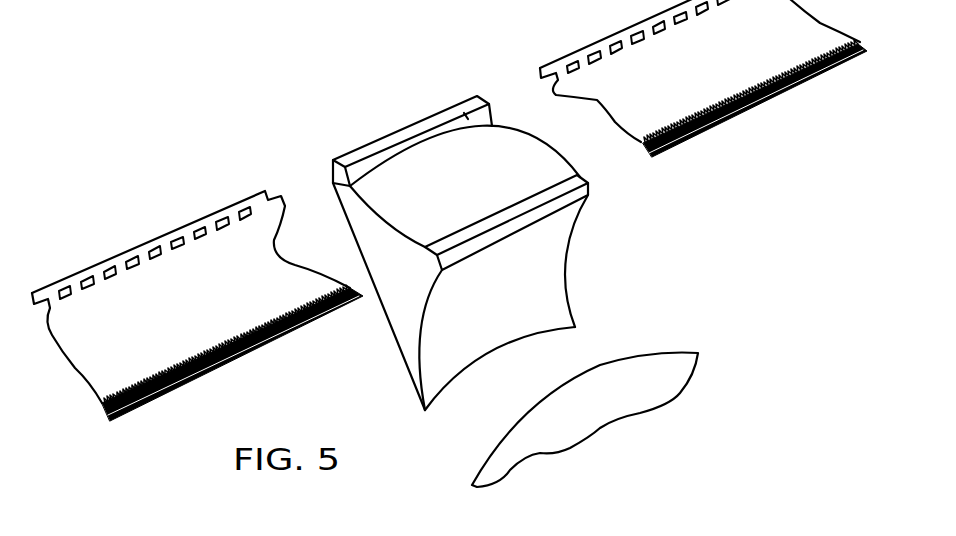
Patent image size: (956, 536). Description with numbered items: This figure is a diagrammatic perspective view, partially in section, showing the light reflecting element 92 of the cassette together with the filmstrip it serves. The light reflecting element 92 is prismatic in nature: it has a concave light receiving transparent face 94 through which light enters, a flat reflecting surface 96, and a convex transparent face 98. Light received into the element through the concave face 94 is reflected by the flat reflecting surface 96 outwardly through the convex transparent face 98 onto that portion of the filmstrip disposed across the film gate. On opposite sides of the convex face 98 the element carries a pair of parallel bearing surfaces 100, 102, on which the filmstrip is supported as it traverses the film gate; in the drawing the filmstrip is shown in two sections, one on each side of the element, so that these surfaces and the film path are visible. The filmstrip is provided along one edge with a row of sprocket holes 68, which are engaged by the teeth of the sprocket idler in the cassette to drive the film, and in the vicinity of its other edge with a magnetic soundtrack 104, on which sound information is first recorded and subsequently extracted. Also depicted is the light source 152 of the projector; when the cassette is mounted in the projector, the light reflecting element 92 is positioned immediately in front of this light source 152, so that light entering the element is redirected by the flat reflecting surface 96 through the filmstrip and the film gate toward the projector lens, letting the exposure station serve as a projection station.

The sprocket holes 68 is at (185, 234).
The magnetic soundtrack 104 is at (143, 408).
The light reflecting element 92 is at (483, 234).
The concave light receiving transparent face 94 is at (553, 295).
The flat reflecting surface 96 is at (388, 327).
The convex transparent face 98 is at (547, 167).
The bearing surface 100 is at (432, 113).
The bearing surface 102 is at (500, 215).
The light source 152 is at (667, 363).